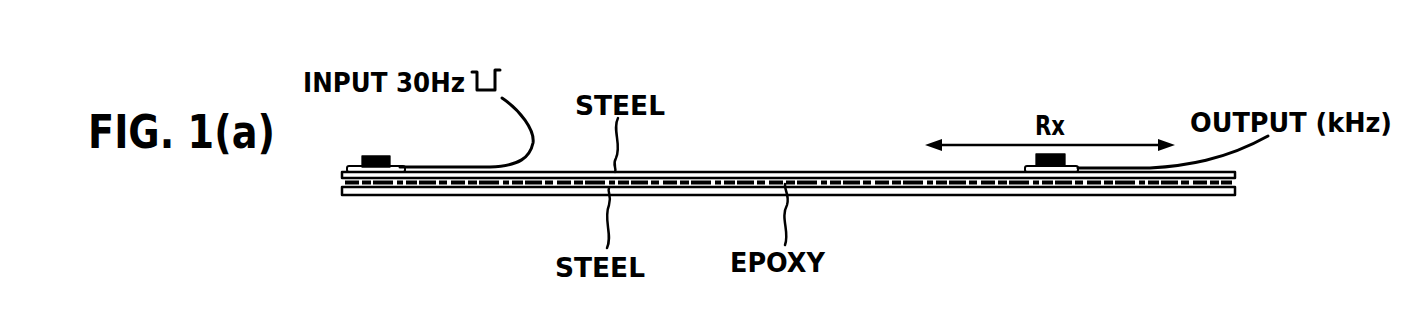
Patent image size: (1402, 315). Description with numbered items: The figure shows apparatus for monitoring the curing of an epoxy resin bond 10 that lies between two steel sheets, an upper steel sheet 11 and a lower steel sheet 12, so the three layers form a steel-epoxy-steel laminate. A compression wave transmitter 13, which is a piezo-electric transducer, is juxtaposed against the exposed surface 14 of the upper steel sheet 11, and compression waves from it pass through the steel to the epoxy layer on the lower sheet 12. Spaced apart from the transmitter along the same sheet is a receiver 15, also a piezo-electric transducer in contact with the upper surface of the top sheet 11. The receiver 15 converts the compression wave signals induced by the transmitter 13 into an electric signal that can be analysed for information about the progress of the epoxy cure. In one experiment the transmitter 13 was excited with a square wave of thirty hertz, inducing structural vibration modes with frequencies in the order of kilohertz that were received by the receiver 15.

The epoxy resin bond 10 is at (788, 202).
The upper steel sheet 11 is at (848, 176).
The lower steel sheet 12 is at (893, 195).
The compression wave transmitter 13 is at (363, 157).
The exposed surface 14 is at (703, 172).
The receiver 15 is at (1050, 168).